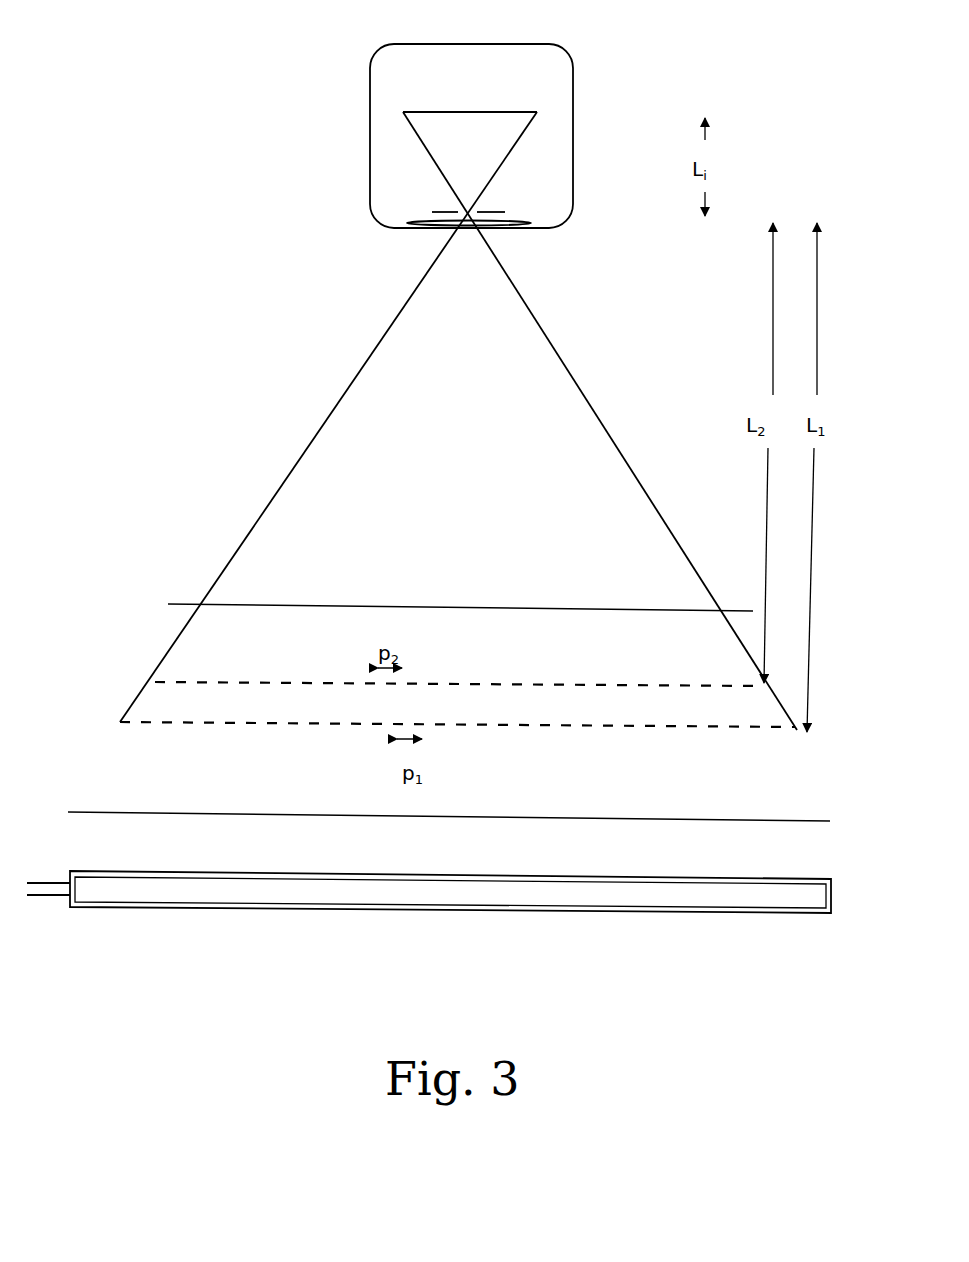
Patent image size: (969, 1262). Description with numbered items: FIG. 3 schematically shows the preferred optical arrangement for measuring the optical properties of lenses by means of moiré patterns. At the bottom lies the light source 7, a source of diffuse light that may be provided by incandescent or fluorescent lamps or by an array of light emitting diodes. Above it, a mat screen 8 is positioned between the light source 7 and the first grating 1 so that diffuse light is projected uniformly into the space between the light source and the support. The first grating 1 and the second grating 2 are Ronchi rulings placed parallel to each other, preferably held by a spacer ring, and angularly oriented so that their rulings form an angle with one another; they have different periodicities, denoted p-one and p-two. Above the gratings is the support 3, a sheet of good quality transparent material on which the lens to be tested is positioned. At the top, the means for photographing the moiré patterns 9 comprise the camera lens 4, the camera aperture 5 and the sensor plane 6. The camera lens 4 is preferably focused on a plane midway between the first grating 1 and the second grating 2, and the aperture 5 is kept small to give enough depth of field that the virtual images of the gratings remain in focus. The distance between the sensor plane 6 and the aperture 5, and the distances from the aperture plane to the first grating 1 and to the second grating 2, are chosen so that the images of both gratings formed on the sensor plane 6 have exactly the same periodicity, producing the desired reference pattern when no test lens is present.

The first grating 1 is at (423, 723).
The second grating 2 is at (424, 676).
The support 3 is at (431, 604).
The camera lens 4 is at (413, 229).
The camera aperture 5 is at (423, 210).
The sensor plane 6 is at (384, 111).
The light source 7 is at (429, 914).
The mat screen 8 is at (449, 799).
The means for photographing the moiré patterns 9 is at (581, 63).